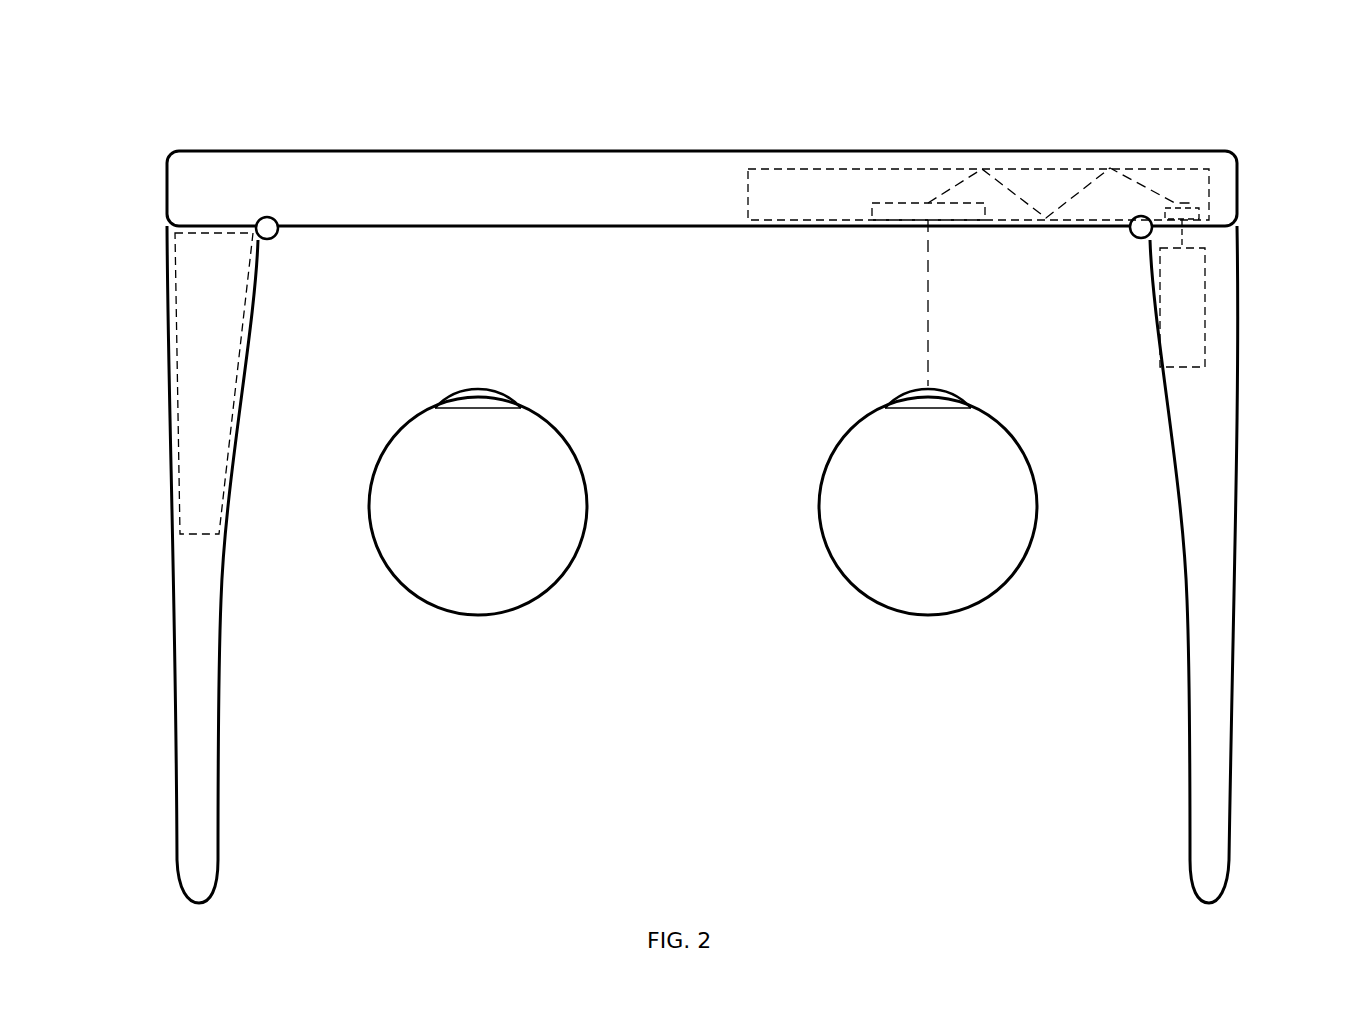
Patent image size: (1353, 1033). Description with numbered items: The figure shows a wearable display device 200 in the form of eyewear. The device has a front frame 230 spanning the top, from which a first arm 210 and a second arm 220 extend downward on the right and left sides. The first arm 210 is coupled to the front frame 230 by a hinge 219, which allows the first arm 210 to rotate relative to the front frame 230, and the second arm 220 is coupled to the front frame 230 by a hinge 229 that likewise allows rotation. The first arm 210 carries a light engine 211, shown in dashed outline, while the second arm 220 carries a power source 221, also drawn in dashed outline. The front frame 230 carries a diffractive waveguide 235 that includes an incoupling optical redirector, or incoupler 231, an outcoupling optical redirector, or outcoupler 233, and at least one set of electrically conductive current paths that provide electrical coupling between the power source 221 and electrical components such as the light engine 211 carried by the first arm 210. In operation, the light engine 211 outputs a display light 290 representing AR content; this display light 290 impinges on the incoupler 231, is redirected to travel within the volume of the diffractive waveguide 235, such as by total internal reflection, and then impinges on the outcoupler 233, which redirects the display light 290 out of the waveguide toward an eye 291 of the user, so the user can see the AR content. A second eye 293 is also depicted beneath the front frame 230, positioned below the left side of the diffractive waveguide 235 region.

The wearable display device 200 is at (404, 88).
The first arm 210 is at (1230, 742).
The light engine 211 is at (1205, 307).
The hinge 219 is at (1133, 236).
The second arm 220 is at (175, 742).
The power source 221 is at (175, 342).
The hinge 229 is at (275, 238).
The front frame 230 is at (618, 150).
The incoupling optical redirector 231 is at (1195, 207).
The outcoupling optical redirector 233 is at (903, 203).
The diffractive waveguide 235 is at (978, 194).
The display light 290 is at (928, 302).
The eye 291 is at (928, 502).
The left eye 293 is at (478, 502).